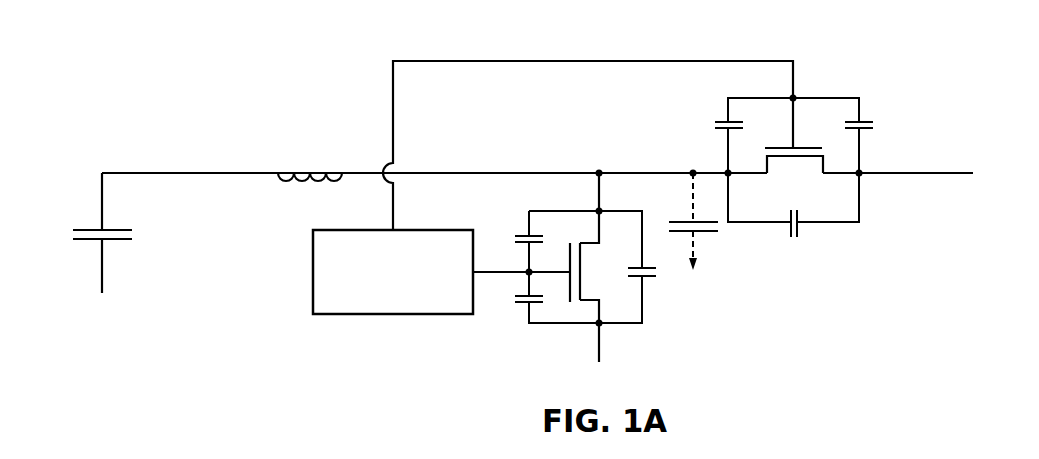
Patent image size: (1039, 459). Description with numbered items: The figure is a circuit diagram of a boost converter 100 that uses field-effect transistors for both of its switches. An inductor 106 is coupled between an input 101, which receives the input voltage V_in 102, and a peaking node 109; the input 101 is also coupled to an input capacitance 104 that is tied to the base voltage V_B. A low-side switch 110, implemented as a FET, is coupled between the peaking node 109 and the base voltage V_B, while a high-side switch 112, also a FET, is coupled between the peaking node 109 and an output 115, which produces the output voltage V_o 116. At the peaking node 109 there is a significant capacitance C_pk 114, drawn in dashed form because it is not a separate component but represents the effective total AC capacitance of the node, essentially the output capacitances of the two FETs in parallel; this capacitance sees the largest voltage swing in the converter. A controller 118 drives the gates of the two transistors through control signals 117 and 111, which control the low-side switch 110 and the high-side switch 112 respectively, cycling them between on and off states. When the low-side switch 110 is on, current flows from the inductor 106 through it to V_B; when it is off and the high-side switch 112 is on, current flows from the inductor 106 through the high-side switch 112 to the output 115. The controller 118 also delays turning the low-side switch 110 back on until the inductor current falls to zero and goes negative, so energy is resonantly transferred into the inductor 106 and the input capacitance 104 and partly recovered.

The boost converter 100 is at (537, 269).
The input 101 is at (202, 173).
The input voltage V_in 102 is at (82, 184).
The input capacitance 104 is at (122, 272).
The inductor 106 is at (310, 165).
The peaking node 109 is at (599, 168).
The low-side switch 110 is at (585, 299).
The control signal 111 is at (590, 134).
The high-side switch 112 is at (794, 167).
The capacitance C_pk 114 is at (714, 233).
The output 115 is at (916, 198).
The output voltage V_o 116 is at (976, 174).
The control signal 117 is at (521, 262).
The controller 118 is at (393, 272).